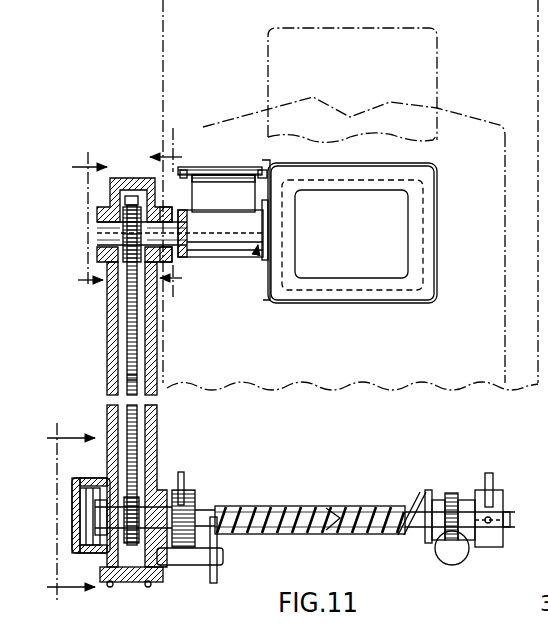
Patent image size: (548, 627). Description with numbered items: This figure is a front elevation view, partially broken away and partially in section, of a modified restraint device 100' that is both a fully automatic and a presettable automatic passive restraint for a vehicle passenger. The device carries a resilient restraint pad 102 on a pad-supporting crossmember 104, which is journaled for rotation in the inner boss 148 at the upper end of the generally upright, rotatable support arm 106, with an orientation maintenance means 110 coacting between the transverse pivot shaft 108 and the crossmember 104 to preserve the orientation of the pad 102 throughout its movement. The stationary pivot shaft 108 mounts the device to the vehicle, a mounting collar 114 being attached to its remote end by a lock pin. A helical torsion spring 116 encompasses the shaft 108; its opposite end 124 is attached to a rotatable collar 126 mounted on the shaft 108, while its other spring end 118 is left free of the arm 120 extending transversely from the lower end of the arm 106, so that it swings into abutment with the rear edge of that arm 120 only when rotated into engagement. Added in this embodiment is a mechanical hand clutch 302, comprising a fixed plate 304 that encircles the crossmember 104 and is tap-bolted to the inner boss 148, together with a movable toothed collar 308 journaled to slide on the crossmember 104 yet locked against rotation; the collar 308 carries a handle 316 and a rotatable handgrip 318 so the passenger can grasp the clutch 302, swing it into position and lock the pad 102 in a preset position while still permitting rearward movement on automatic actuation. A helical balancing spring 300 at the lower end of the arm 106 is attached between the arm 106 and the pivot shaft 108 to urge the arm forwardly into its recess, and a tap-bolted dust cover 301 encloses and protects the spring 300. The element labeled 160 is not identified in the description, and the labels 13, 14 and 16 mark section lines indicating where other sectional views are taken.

The restraint device 100' is at (147, 346).
The inner boss 148 is at (175, 212).
The section line 14 is at (82, 217).
The section line 16 is at (176, 216).
The section line 13 is at (61, 513).
The pad-supporting crossmember 104 is at (100, 231).
The rotatable support arm 106 is at (107, 340).
The orientation maintenance means 110 is at (128, 357).
The nut 160 is at (133, 378).
The mechanical hand clutch 302 is at (222, 160).
The rotatable handgrip 318 is at (246, 163).
The handle 316 is at (193, 196).
The fixed plate 304 is at (182, 258).
The movable toothed collar 308 is at (255, 257).
The resilient restraint pad 102 is at (430, 195).
The dust cover 301 is at (83, 481).
The balancing spring 300 is at (80, 545).
The arm 120 is at (178, 560).
The spring end 118 is at (218, 575).
The helical torsion spring 116 is at (332, 515).
The pivot shaft 108 is at (344, 530).
The opposite spring end 124 is at (418, 485).
The rotatable collar 126 is at (466, 492).
The mounting collar 114 is at (500, 490).